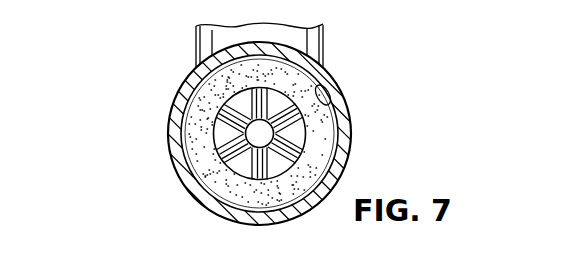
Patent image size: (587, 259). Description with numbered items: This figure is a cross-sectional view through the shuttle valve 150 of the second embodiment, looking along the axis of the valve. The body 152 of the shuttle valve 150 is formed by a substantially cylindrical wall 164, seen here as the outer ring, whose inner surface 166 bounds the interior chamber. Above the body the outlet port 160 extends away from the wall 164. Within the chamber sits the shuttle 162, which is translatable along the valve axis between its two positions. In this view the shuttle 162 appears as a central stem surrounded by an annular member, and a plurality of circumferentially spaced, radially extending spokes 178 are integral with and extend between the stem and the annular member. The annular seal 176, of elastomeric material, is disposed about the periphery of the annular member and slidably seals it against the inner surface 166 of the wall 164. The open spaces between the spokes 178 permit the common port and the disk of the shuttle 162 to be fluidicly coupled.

The shuttle valve 150 is at (386, 46).
The body 152 is at (338, 76).
The outlet port 160 is at (192, 31).
The shuttle 162 is at (320, 141).
The substantially cylindrical wall 164 is at (176, 143).
The inner surface 166 is at (318, 91).
The annular seal 176 is at (207, 178).
The spokes 178 is at (251, 98).